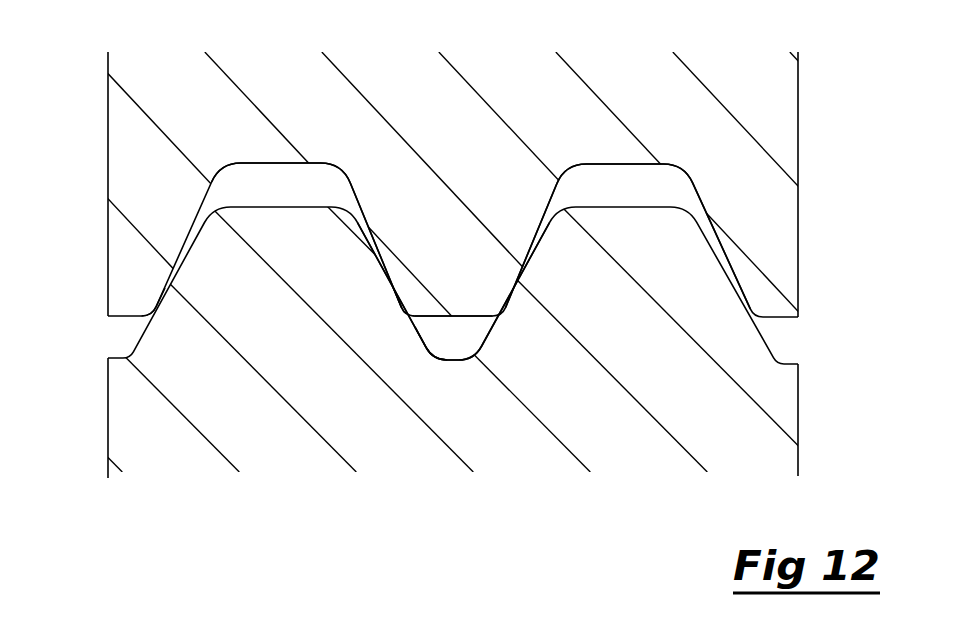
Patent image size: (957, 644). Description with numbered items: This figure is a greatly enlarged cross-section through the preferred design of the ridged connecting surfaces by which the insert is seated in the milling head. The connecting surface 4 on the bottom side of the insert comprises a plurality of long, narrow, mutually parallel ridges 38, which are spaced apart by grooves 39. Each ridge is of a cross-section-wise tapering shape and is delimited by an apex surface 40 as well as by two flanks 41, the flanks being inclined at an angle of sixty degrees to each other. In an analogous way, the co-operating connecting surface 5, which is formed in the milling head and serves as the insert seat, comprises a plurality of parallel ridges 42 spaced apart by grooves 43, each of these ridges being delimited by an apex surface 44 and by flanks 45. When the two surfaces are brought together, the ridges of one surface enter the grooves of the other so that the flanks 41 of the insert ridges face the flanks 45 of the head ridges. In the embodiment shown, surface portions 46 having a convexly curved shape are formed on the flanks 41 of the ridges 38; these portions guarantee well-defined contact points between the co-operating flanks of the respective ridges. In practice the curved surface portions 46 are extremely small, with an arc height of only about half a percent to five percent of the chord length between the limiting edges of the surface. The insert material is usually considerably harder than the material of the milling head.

The connecting surface 4 is at (90, 231).
The connecting surface 5 is at (803, 347).
The ridge 38 is at (485, 263).
The groove 39 is at (655, 185).
The apex surface 40 is at (453, 318).
The flank 41 is at (372, 238).
The ridge 42 is at (690, 292).
The groove 43 is at (430, 337).
The apex surface 44 is at (278, 200).
The flank 45 is at (155, 310).
The surface portion 46 is at (392, 287).